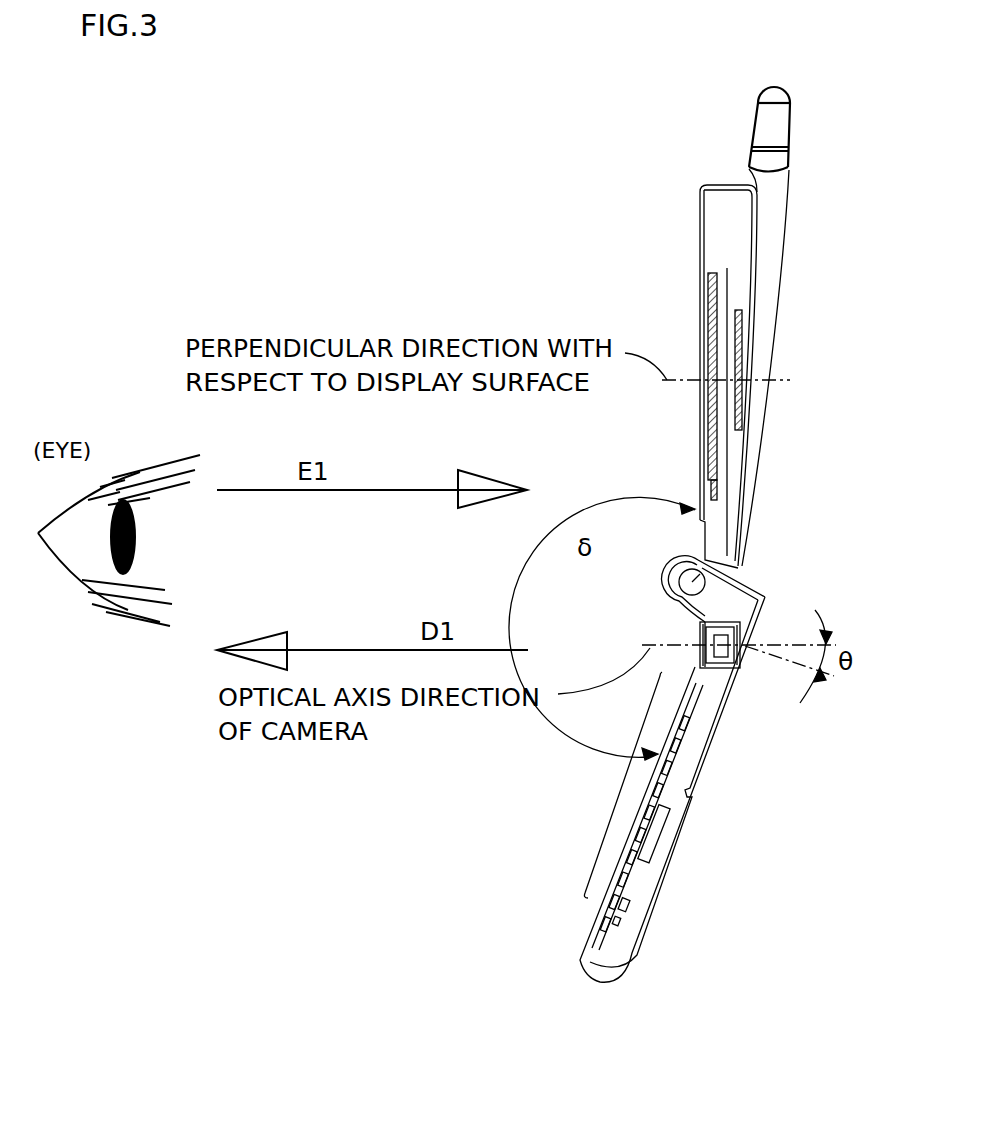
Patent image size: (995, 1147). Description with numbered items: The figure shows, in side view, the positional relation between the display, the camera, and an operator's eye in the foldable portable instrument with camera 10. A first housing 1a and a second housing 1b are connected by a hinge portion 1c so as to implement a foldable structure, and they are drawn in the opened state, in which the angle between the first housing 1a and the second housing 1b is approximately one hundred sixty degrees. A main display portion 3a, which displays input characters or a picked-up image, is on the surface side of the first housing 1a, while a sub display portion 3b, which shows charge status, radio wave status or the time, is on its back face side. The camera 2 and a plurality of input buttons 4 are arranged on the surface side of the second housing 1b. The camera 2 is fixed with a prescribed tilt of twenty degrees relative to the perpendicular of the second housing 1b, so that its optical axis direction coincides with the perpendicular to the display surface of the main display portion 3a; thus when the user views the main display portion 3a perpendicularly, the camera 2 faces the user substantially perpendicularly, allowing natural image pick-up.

The foldable portable instrument with camera 10 is at (818, 127).
The first housing 1a is at (770, 262).
The second housing 1b is at (716, 760).
The hinge portion 1c is at (712, 566).
The camera 2 is at (735, 668).
The main display portion 3a is at (711, 324).
The sub display portion 3b is at (742, 325).
The input buttons 4 is at (621, 785).